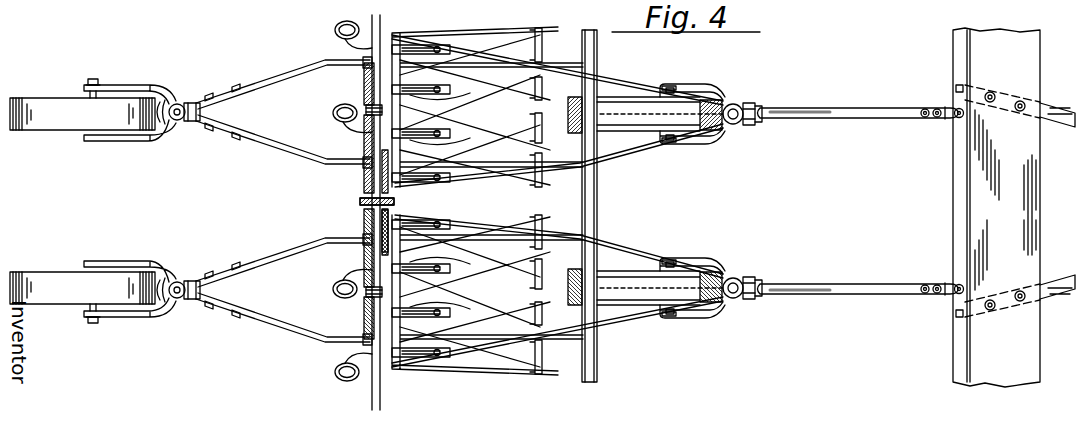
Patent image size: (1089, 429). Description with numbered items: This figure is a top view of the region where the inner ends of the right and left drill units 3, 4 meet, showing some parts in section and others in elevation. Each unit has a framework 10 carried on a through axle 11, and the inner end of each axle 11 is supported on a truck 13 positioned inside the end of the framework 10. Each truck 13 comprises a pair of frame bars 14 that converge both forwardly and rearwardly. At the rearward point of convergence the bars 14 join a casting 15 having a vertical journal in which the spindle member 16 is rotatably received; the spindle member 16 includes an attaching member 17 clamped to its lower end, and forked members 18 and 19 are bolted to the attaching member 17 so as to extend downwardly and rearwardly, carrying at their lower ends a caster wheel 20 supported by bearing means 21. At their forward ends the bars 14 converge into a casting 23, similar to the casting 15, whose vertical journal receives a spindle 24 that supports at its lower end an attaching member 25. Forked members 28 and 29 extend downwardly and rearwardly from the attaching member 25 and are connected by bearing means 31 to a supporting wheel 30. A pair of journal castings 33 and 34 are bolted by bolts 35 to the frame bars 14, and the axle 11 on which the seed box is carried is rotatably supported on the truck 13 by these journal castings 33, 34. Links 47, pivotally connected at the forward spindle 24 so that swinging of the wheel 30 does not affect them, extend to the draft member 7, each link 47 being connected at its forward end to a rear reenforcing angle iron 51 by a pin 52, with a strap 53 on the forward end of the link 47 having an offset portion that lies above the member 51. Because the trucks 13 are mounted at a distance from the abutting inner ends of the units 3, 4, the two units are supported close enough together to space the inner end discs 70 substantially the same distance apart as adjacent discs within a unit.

The right drill unit 3 is at (611, 352).
The left drill unit 4 is at (622, 52).
The draft member 7 is at (1040, 31).
The framework 10 is at (589, 384).
The axle 11 is at (381, 404).
The truck 13 is at (612, 240).
The frame bars 14 is at (312, 338).
The casting 15 is at (188, 278).
The spindle member 16 is at (176, 298).
The attaching member 17 is at (160, 302).
The forked member 18 is at (150, 260).
The forked member 19 is at (108, 315).
The caster wheel 20 is at (16, 256).
The bearing means 21 is at (96, 318).
The casting 23 is at (735, 278).
The spindle 24 is at (750, 282).
The attaching member 25 is at (757, 289).
The forked member 28 is at (728, 262).
The forked member 29 is at (727, 314).
The supporting wheel 30 is at (630, 290).
The bearing means 31 is at (670, 264).
The journal casting 33 is at (368, 254).
The journal casting 34 is at (366, 318).
The bolts 35 is at (363, 357).
The links 47 is at (862, 284).
The rear reenforcing angle iron 51 is at (953, 172).
The pin 52 is at (956, 294).
The strap 53 is at (938, 282).
The inner end discs 70 is at (490, 272).